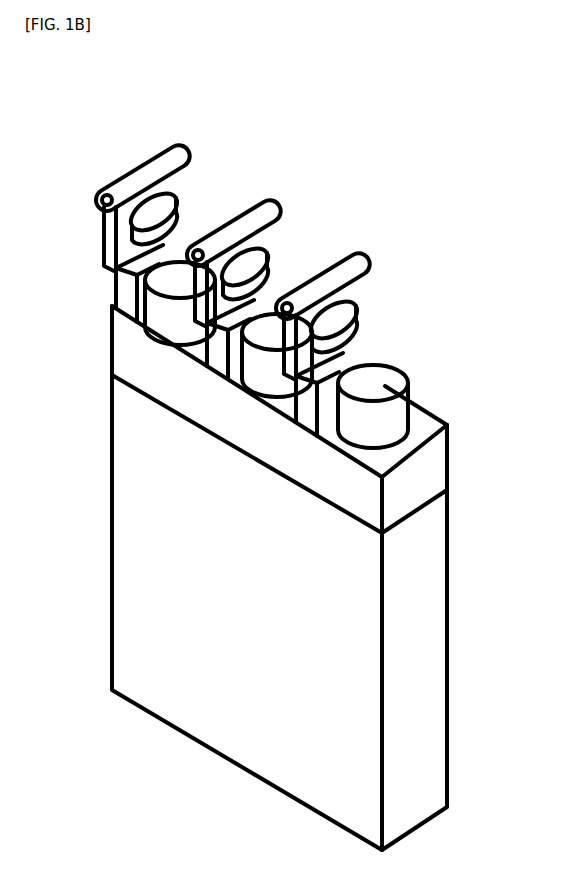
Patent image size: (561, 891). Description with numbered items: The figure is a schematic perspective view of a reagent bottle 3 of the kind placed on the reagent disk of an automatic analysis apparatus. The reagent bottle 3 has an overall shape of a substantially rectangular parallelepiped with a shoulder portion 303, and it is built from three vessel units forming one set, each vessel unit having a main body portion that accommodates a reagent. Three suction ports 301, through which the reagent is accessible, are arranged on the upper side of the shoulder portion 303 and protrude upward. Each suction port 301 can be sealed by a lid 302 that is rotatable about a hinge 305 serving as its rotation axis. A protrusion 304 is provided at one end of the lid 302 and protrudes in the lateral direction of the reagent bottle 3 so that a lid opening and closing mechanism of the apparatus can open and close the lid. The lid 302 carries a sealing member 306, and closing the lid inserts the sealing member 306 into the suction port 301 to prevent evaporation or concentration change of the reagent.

The reagent bottle 3 is at (108, 86).
The suction port 301 is at (381, 380).
The lid 302 is at (267, 200).
The shoulder portion 303 is at (422, 413).
The protrusion 304 is at (372, 258).
The hinge 305 is at (105, 268).
The sealing member 306 is at (278, 242).